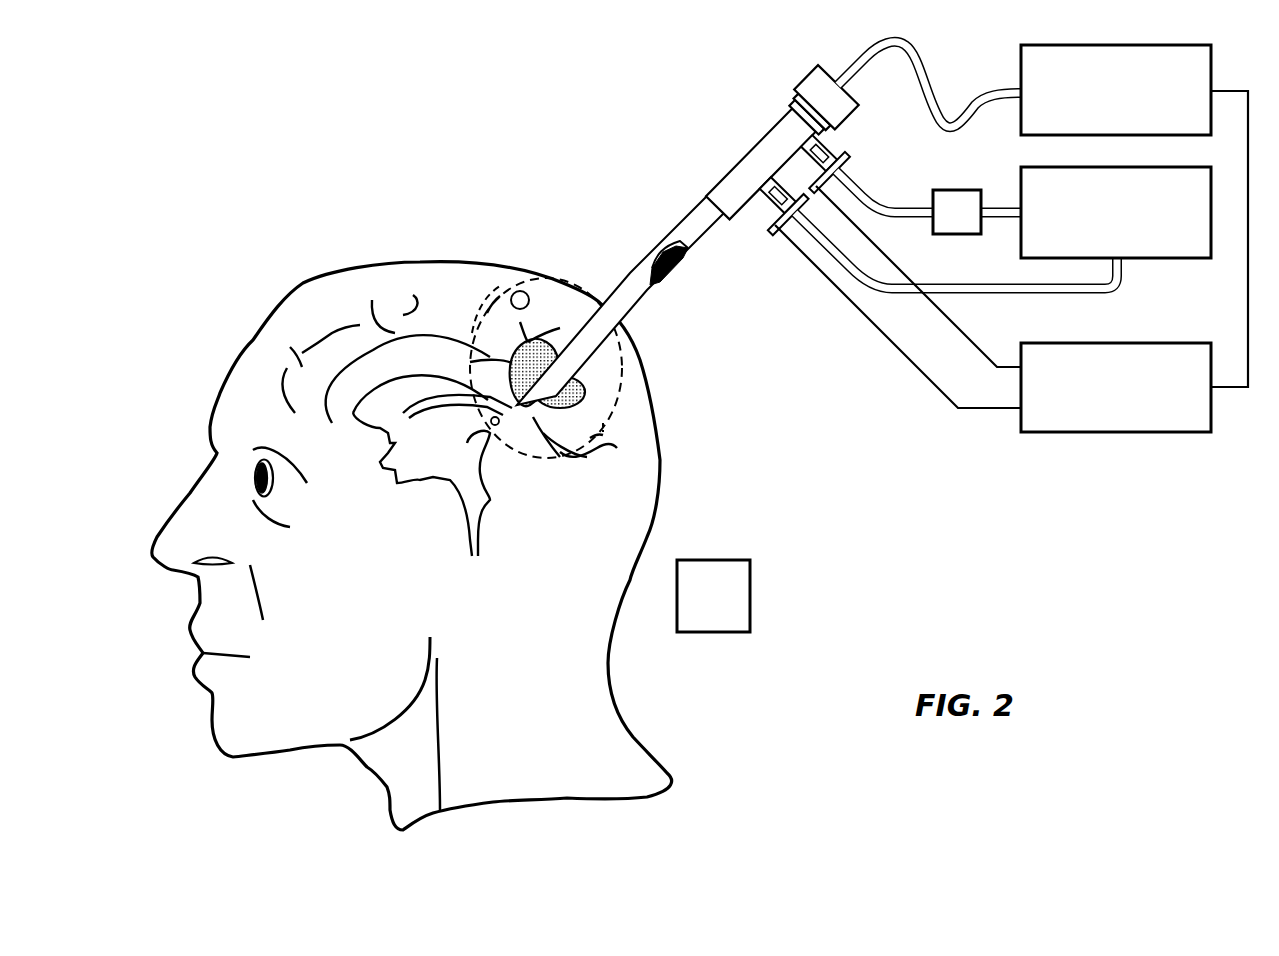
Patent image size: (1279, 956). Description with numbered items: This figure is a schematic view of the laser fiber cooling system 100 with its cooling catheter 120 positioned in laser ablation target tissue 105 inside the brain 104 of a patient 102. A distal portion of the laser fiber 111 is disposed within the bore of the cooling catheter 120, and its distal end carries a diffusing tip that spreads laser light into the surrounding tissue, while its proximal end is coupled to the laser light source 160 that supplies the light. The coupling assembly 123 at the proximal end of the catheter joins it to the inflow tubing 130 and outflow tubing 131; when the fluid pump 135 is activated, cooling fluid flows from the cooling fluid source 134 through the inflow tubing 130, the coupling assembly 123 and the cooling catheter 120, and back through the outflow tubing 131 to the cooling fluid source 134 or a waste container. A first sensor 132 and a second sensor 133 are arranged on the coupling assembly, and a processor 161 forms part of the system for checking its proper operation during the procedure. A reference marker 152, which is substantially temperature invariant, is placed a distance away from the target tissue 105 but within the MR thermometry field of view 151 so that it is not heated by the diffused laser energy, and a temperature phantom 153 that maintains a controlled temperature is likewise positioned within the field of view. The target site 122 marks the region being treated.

The laser fiber cooling system 100 is at (817, 225).
The patient 102 is at (203, 339).
The brain 104 is at (392, 307).
The laser ablation target tissue 105 is at (580, 403).
The laser fiber 111 is at (684, 268).
The cooling catheter 120 is at (644, 294).
The target site 122 is at (535, 410).
The coupling assembly 123 is at (752, 130).
The inflow tubing 130 is at (882, 206).
The outflow tubing 131 is at (1036, 296).
The first sensor 132 is at (834, 151).
The second sensor 133 is at (771, 230).
The cooling fluid source 134 is at (1116, 212).
The fluid pump 135 is at (957, 212).
The MR thermometry field of view 151 is at (623, 376).
The reference marker 152 is at (522, 291).
The temperature phantom 153 is at (713, 596).
The laser light source 160 is at (1116, 90).
The processor 161 is at (1116, 387).